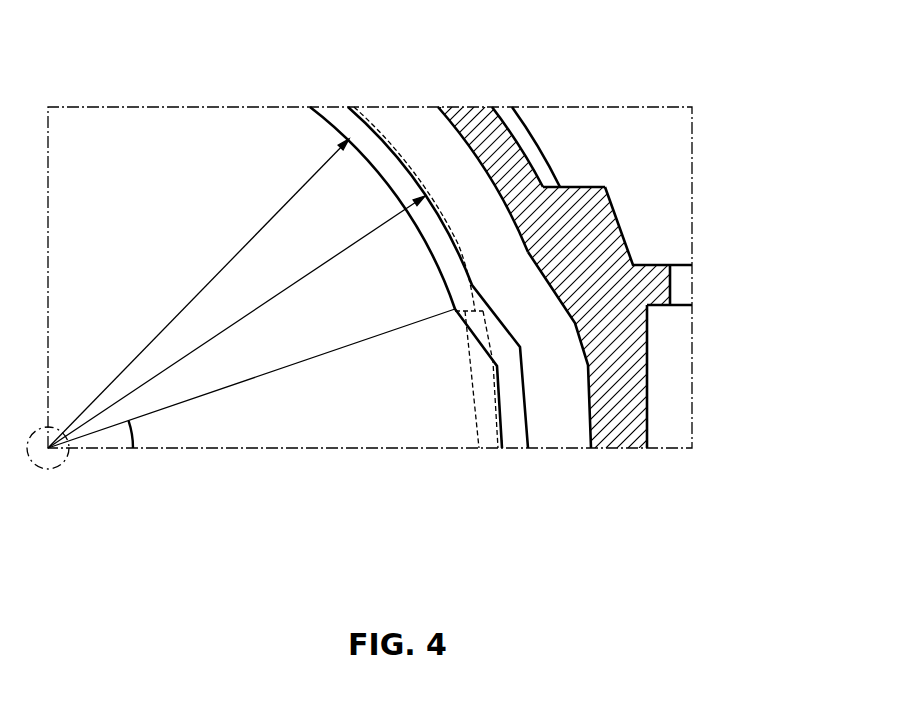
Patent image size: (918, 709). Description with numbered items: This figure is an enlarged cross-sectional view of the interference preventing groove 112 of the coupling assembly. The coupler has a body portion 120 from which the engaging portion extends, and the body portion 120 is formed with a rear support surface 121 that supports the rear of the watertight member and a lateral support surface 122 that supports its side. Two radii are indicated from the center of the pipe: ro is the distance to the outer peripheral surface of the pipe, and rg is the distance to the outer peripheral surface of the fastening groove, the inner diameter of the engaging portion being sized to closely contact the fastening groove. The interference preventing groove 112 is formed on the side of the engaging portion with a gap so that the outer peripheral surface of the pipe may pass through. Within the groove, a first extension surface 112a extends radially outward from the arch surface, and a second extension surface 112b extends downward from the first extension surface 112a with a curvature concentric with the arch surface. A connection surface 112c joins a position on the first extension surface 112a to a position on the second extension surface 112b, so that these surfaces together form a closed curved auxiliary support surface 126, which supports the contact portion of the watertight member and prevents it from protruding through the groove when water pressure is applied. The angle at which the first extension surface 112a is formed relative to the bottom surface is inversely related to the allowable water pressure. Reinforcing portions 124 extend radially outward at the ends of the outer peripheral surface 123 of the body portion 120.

The interference preventing groove 112 is at (419, 349).
The first extension surface 112a is at (455, 312).
The second extension surface 112b is at (501, 423).
The connection surface 112c is at (463, 345).
The body portion 120 is at (475, 110).
The rear support surface 121 is at (453, 135).
The lateral support surface 122 is at (588, 402).
The outer peripheral surface 123 is at (531, 133).
The reinforcing portion 124 is at (618, 200).
The auxiliary support surface 126 is at (484, 356).
The distance from pipe center to fastening groove outer peripheral surface rg is at (198, 293).
The distance from pipe center to pipe outer peripheral surface ro is at (236, 322).